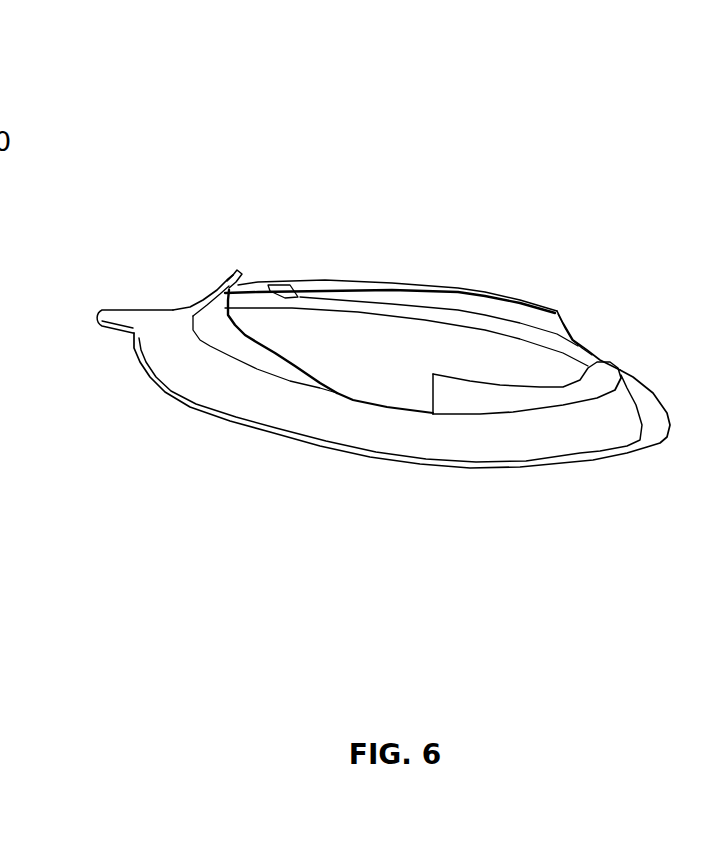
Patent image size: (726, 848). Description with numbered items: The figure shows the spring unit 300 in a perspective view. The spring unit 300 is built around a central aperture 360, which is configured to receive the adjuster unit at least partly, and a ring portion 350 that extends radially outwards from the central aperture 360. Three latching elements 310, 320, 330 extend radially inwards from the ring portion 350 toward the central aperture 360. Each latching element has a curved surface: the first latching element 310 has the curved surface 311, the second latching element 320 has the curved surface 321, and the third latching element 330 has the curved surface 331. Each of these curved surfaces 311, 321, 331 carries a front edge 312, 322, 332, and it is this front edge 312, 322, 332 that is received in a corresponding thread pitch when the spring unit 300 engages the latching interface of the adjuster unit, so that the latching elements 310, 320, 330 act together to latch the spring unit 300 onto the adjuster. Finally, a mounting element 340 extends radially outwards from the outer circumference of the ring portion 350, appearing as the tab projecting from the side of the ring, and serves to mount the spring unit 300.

The spring unit 300 is at (468, 166).
The latching element 310 is at (143, 368).
The curved surface 311 is at (208, 340).
The front edge 312 is at (220, 276).
The latching element 320 is at (519, 284).
The curved surface 321 is at (485, 303).
The front edge 322 is at (374, 283).
The latching element 330 is at (516, 412).
The curved surface 331 is at (583, 393).
The front edge 332 is at (430, 375).
The mounting element 340 is at (114, 310).
The ring portion 350 is at (273, 412).
The central aperture 360 is at (383, 359).